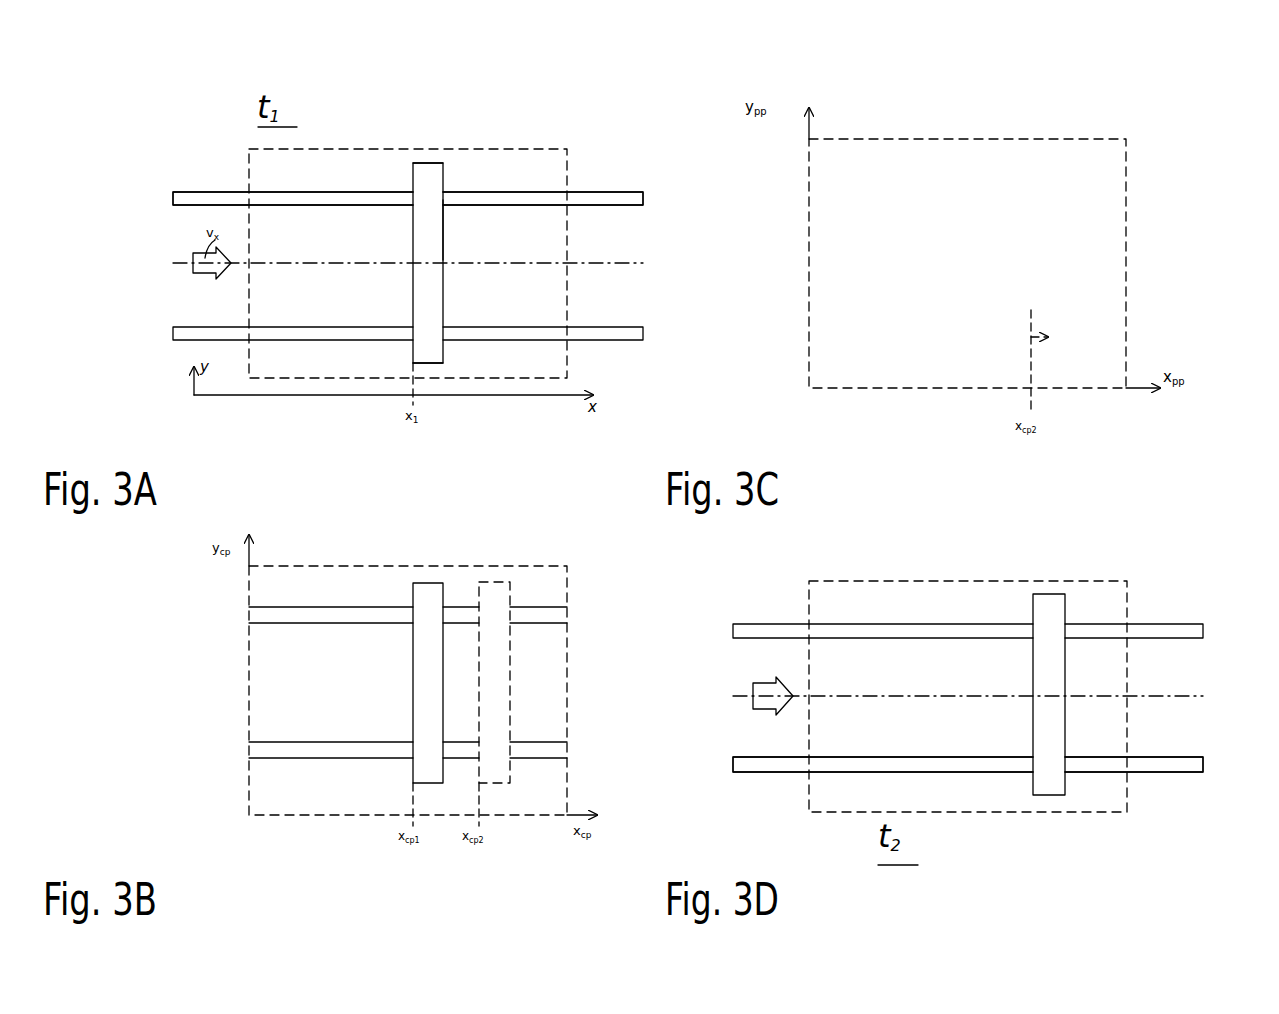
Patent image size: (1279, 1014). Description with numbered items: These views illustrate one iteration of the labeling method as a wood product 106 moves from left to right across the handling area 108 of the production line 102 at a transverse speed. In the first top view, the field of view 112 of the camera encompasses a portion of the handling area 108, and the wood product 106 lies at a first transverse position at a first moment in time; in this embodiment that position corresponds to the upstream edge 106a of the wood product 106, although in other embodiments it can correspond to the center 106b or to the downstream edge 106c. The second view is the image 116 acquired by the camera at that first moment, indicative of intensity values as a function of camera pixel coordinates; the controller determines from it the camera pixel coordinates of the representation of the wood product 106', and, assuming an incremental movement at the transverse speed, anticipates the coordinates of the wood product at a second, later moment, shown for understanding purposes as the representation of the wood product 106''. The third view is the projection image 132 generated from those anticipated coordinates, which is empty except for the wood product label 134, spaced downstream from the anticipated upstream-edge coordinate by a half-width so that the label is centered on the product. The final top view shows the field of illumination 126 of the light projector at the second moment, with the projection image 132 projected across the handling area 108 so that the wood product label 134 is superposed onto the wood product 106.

In FIG. 3A, the production line 102 is at (190, 178).
In FIG. 3D, the production line 102 is at (778, 618).
In FIG. 3A, the wood product 106 is at (486, 212).
In FIG. 3D, the wood product 106 is at (1106, 647).
In FIG. 3A, the upstream edge 106a is at (410, 175).
In FIG. 3A, the center 106b is at (426, 247).
In FIG. 3A, the downstream edge 106c is at (445, 352).
In FIG. 3B, the representation of the wood product 106' is at (475, 626).
In FIG. 3B, the representation of the wood product 106'' is at (524, 734).
In FIG. 3A, the handling area 108 is at (330, 257).
In FIG. 3D, the handling area 108 is at (935, 750).
In FIG. 3A, the field of view 112 is at (540, 150).
In FIG. 3B, the image 116 is at (362, 567).
In FIG. 3D, the field of illumination 126 is at (977, 578).
In FIG. 3C, the projection image 132 is at (968, 137).
In FIG. 3C, the wood product label 134 is at (1065, 170).
In FIG. 3D, the wood product label 134 is at (1052, 775).